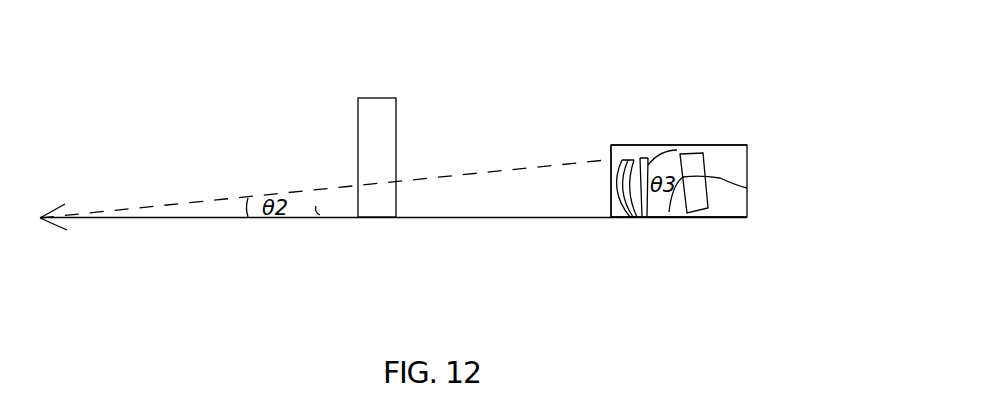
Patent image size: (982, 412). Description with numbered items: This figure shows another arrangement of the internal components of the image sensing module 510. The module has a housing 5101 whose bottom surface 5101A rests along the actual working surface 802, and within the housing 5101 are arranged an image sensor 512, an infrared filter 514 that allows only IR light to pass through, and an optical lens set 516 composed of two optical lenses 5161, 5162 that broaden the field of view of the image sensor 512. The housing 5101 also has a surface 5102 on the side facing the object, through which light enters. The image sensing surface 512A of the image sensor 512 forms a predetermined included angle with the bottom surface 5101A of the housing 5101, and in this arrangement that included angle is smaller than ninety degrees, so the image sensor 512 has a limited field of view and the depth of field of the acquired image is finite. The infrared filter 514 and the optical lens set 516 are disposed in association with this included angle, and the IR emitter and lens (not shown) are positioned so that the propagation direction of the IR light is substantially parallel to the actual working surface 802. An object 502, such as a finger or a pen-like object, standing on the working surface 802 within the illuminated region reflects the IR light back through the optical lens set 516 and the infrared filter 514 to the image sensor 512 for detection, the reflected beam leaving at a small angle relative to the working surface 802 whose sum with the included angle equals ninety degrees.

The object 502 is at (380, 97).
The actual working surface 802 is at (318, 205).
The image sensing module 510 is at (768, 132).
The housing 5101 is at (616, 145).
The light exit surface 5102 is at (608, 154).
The bottom surface 5101A is at (738, 219).
The optical lens set 516 is at (629, 245).
The optical lens 5162 is at (630, 220).
The optical lens 5161 is at (677, 225).
The infrared filter 514 is at (677, 150).
The image sensor 512 is at (700, 166).
The image sensing surface 512A is at (747, 188).